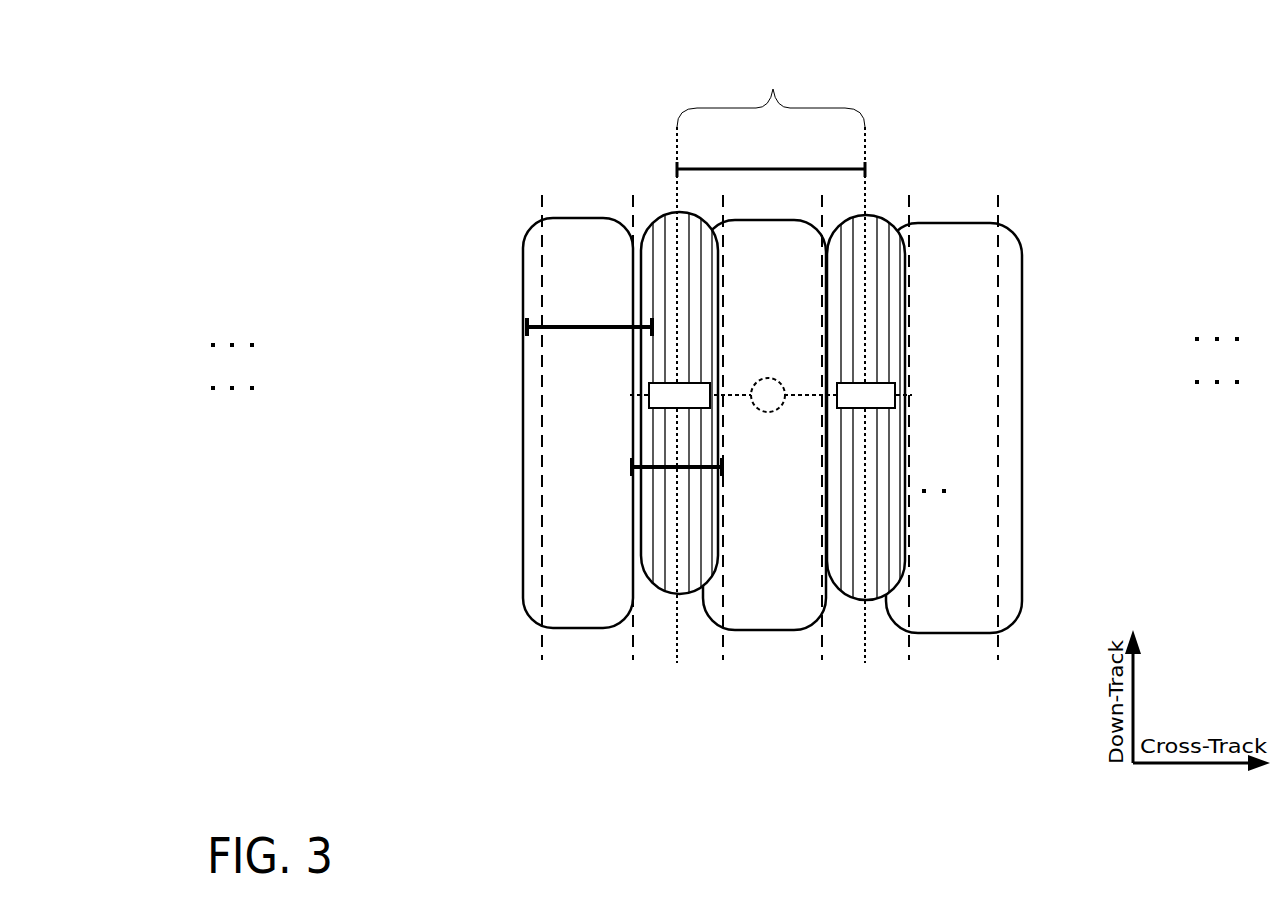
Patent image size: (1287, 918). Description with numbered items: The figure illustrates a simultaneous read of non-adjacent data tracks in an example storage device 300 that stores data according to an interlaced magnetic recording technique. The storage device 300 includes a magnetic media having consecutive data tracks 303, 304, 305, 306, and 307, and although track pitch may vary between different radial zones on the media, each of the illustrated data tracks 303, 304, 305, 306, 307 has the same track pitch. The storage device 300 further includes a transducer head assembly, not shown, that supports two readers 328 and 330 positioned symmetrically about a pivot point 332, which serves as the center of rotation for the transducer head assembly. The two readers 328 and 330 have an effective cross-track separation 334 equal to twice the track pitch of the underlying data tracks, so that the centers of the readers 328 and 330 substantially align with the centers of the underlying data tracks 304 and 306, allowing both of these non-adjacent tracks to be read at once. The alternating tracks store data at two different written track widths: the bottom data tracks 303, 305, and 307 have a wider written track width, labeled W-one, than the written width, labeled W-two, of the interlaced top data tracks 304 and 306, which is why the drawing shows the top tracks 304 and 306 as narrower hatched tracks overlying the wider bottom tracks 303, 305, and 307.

The storage device 300 is at (243, 93).
The data track 303 is at (568, 272).
The data track 304 is at (664, 272).
The data track 305 is at (752, 272).
The data track 306 is at (843, 272).
The data track 307 is at (940, 272).
The reader 328 is at (679, 395).
The reader 330 is at (866, 395).
The pivot point 332 is at (770, 412).
The effective cross-track separation 334 is at (774, 89).